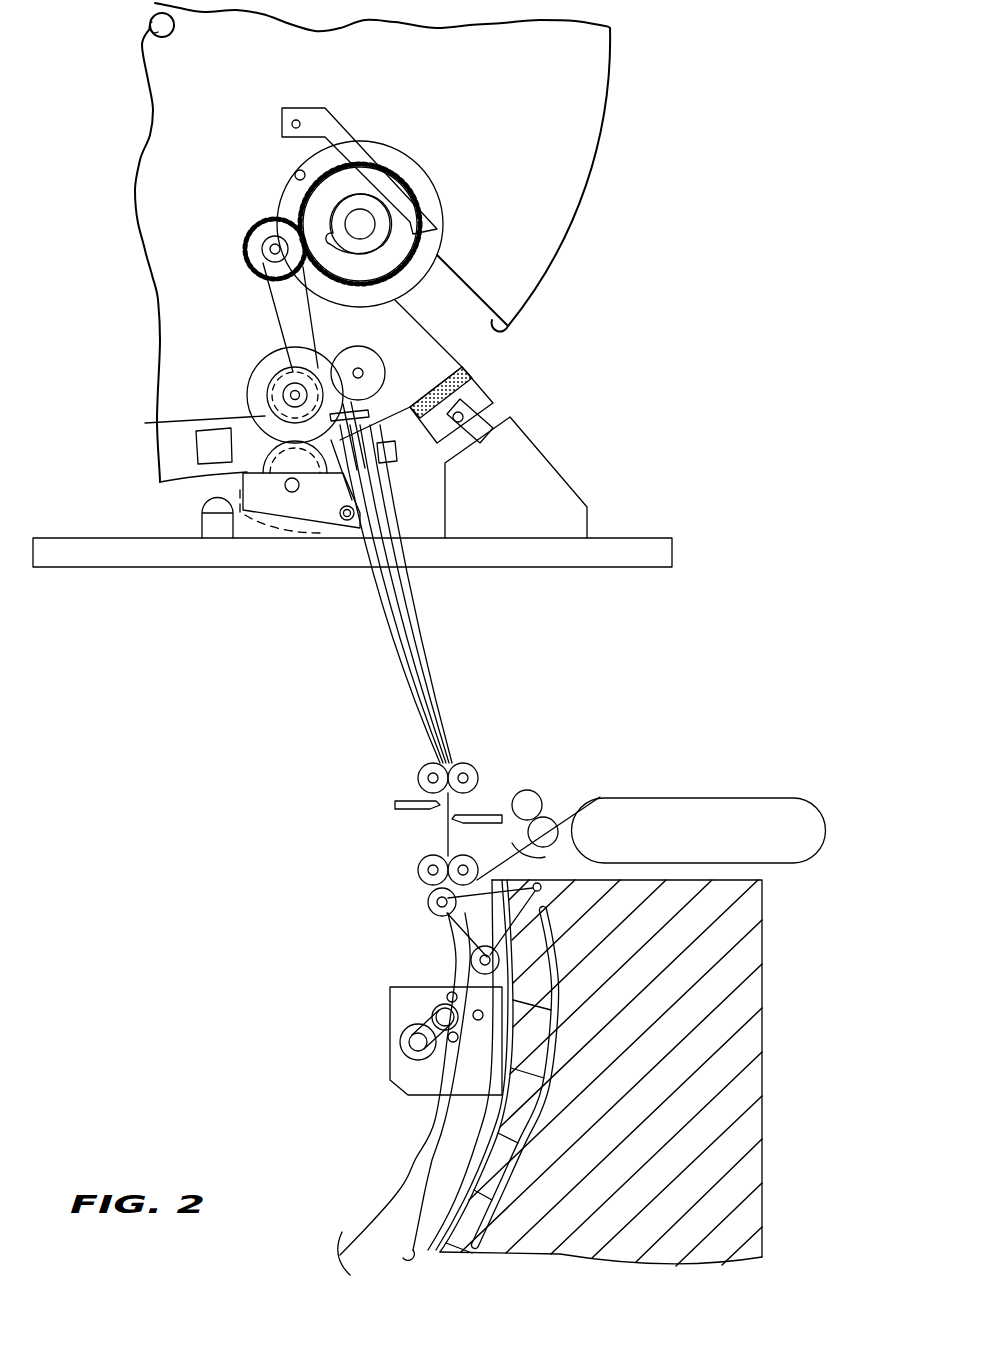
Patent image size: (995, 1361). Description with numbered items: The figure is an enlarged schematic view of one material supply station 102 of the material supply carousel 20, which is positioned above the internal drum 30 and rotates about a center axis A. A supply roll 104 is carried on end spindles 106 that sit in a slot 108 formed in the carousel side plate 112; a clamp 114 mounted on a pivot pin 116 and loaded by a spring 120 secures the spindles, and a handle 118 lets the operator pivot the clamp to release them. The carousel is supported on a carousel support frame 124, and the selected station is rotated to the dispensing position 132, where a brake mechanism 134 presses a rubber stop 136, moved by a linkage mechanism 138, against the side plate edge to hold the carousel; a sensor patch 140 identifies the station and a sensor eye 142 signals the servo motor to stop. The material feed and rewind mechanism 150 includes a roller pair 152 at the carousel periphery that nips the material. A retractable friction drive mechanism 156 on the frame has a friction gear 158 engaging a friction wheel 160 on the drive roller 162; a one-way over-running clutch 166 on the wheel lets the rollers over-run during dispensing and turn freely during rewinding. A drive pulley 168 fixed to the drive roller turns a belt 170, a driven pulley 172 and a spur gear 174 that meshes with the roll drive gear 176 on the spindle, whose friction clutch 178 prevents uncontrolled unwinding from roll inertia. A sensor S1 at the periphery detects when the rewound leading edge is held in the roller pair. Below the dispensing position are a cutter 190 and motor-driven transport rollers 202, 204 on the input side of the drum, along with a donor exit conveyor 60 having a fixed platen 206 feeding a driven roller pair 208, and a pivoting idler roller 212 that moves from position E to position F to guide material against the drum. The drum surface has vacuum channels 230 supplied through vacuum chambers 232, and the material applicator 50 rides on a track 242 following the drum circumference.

The material supply carousel 20 is at (588, 225).
The internal drum 30 is at (477, 1160).
The material applicator 50 is at (390, 1024).
The donor exit conveyor 60 is at (621, 753).
The material supply station 102 is at (426, 94).
The supply roll 104 is at (412, 156).
The end spindle 106 is at (398, 245).
The slot 108 is at (512, 328).
The carousel side plate 112 is at (600, 140).
The clamp 114 is at (360, 150).
The pivot pin 116 is at (297, 119).
The handle 118 is at (378, 230).
The spring 120 is at (308, 170).
The carousel support frame 124 is at (133, 568).
The dispensing position 132 is at (517, 351).
The brake mechanism 134 is at (565, 495).
The rubber stop 136 is at (470, 367).
The linkage mechanism 138 is at (490, 408).
The sensor patch 140 is at (200, 449).
The sensor eye 142 is at (205, 521).
The material feed and rewind mechanism 150 is at (131, 246).
The roller pair 152 is at (280, 398).
The friction drive mechanism 156 is at (316, 512).
The friction gear 158 is at (243, 473).
The friction wheel 160 is at (160, 423).
The drive roller 162 is at (262, 384).
The one-way over-running clutch 166 is at (275, 384).
The drive pulley 168 is at (272, 358).
The belt 170 is at (272, 278).
The driven pulley 172 is at (265, 247).
The spur gear 174 is at (262, 220).
The roll drive gear 176 is at (335, 210).
The friction clutch 178 is at (330, 197).
The cutter 190 is at (395, 804).
The transport rollers 202 is at (418, 770).
The transport rollers 204 is at (420, 865).
The fixed platen 206 is at (532, 860).
The roller pair 208 is at (526, 797).
The pivoting idler roller 212 is at (474, 952).
The vacuum channels 230 is at (403, 1258).
The vacuum chambers 232 is at (474, 1250).
The track 242 is at (400, 1197).
The center axis A is at (150, 30).
The position E is at (427, 898).
The position F is at (454, 960).
The sensor S1 is at (396, 458).